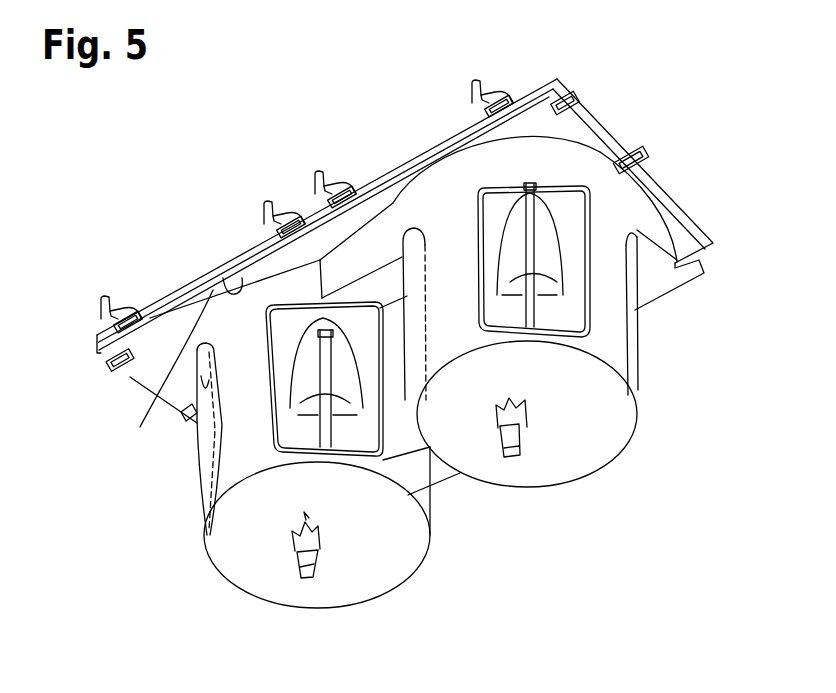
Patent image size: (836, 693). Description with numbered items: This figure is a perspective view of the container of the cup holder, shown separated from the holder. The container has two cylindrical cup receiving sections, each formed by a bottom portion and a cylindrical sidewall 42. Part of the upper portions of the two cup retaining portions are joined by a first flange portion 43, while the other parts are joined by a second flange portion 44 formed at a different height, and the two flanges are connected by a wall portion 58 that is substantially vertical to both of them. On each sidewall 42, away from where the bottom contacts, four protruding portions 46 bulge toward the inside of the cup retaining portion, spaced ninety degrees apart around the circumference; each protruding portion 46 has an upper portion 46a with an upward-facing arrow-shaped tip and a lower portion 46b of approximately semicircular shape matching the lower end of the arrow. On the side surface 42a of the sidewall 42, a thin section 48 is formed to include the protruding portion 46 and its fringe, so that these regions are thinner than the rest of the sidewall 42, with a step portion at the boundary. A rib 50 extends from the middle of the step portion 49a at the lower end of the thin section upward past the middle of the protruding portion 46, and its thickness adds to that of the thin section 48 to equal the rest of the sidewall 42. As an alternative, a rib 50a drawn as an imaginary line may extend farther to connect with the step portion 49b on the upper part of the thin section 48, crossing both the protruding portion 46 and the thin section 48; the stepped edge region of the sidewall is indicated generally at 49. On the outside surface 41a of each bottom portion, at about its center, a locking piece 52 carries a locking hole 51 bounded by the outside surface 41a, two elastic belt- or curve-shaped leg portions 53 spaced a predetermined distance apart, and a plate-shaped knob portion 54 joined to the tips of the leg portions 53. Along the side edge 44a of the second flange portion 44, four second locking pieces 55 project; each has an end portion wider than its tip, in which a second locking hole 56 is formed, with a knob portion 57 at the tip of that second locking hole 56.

The outside surface 41a is at (385, 578).
The sidewall 42 is at (407, 121).
The side surface 42a is at (230, 420).
The first flange portion 43 is at (370, 260).
The second flange portion 44 is at (132, 374).
The side edge 44a is at (200, 286).
The protruding portion 46 is at (547, 223).
The upper portion 46a is at (548, 250).
The lower portion 46b is at (571, 330).
The thin section 48 is at (488, 322).
The side rib 49 is at (580, 313).
The step portion 49a is at (505, 322).
The step portion 49b is at (483, 190).
The rib 50 is at (547, 320).
The rib 50a is at (530, 183).
The locking hole 51 is at (316, 499).
The locking piece 52 is at (313, 585).
The leg portion 53 is at (295, 542).
The knob portion 54 is at (298, 568).
The second locking piece 55 is at (102, 300).
The second locking hole 56 is at (137, 318).
The knob portion 57 is at (114, 300).
The wall portion 58 is at (657, 213).